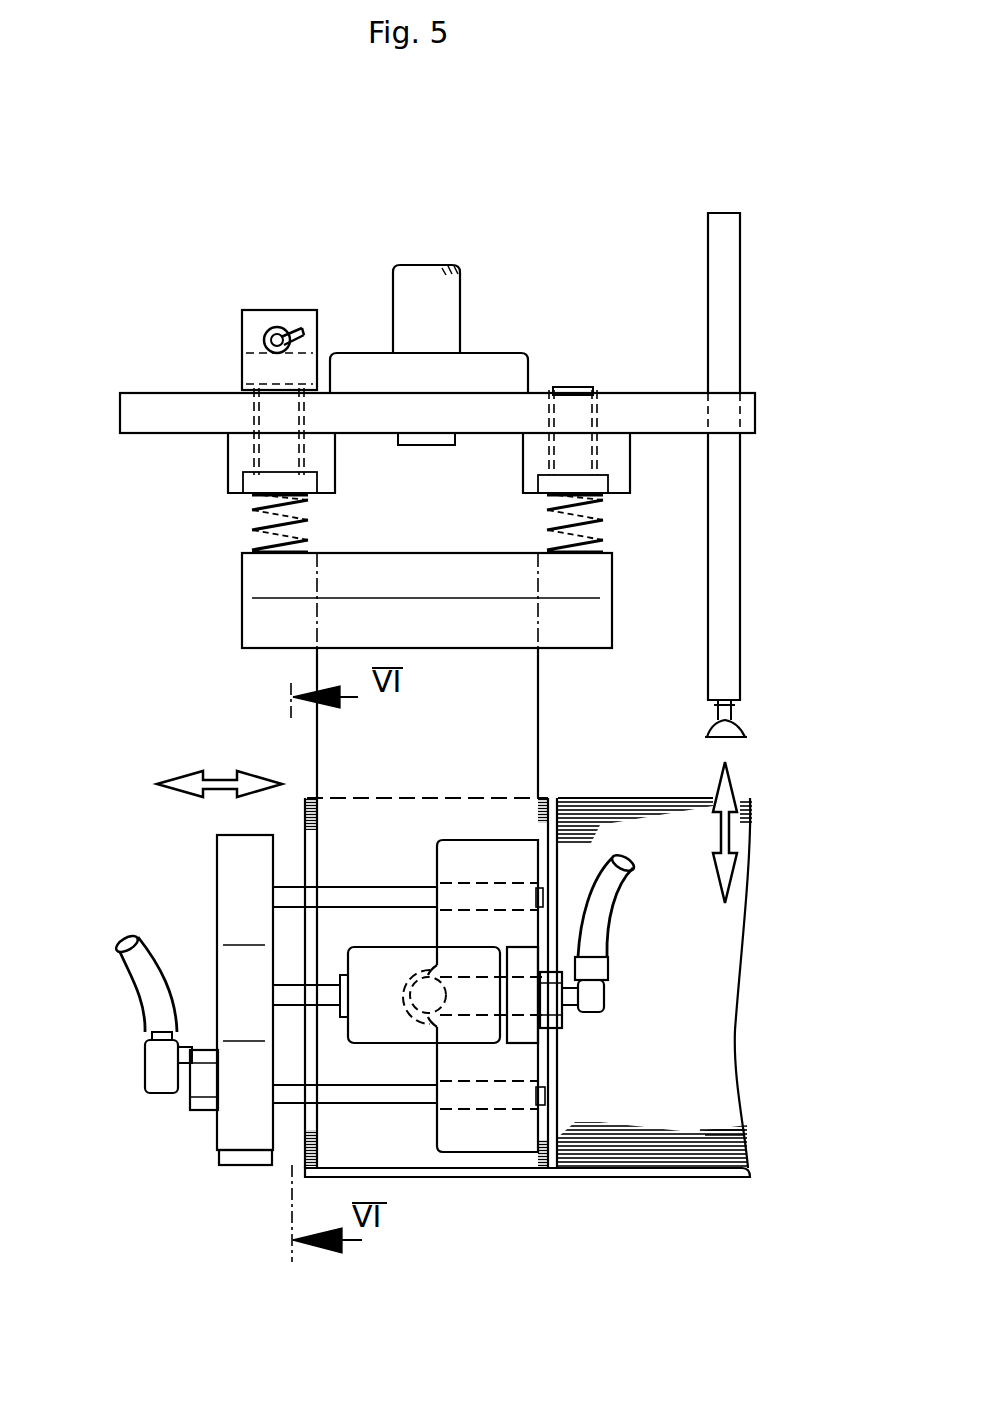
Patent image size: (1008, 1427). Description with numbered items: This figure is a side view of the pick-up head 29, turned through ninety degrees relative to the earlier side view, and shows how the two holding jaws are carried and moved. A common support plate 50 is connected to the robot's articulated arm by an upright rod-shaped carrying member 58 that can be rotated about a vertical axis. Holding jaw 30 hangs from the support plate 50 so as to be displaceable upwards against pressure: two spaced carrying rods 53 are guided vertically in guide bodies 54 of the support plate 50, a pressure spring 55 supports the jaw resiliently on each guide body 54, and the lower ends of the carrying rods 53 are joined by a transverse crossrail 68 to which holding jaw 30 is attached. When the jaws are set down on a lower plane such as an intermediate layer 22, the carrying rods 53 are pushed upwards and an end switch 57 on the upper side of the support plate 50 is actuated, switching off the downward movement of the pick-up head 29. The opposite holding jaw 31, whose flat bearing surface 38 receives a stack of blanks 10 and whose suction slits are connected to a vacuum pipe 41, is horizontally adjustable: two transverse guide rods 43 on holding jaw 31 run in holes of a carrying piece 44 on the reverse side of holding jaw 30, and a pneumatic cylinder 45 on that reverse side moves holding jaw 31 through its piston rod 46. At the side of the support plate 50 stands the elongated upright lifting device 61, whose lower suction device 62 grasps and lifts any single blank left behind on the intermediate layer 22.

The stack of blanks 10 is at (760, 1015).
The intermediate layer 22 is at (725, 1176).
The pick-up head 29 is at (583, 270).
The holding jaw 30 is at (500, 740).
The holding jaw 31 is at (205, 1128).
The bearing surface 38 is at (285, 1045).
The vacuum pipe 41 is at (137, 962).
The transverse guide rod 43 is at (353, 880).
The carrying piece 44 is at (515, 1137).
The pneumatic cylinder 45 is at (367, 970).
The piston rod 46 is at (297, 997).
The support plate 50 is at (757, 417).
The carrying rod 53 is at (572, 388).
The guide body 54 is at (228, 488).
The pressure spring 55 is at (247, 532).
The end switch 57 is at (240, 328).
The carrying member 58 is at (445, 297).
The lifting device 61 is at (730, 305).
The suction device 62 is at (740, 730).
The transverse crossrail 68 is at (257, 634).